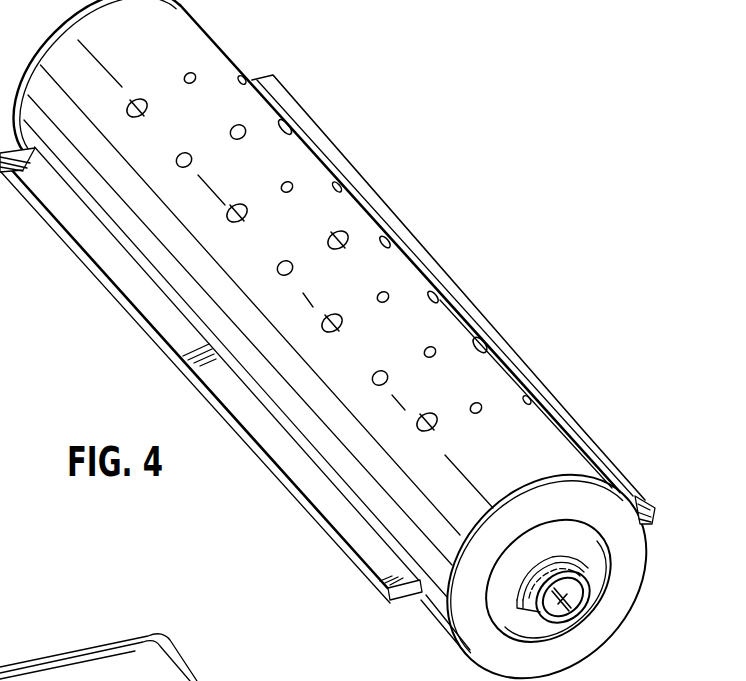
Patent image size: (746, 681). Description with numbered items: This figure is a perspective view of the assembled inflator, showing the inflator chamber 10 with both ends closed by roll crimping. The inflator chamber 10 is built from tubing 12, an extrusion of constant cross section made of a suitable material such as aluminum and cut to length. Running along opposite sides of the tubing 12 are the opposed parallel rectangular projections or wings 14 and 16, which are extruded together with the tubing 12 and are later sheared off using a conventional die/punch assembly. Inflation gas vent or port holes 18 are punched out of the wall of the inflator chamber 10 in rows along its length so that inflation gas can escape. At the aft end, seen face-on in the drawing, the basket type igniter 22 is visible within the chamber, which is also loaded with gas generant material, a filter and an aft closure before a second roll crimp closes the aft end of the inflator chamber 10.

The inflator chamber 10 is at (343, 340).
The tubing 12 is at (453, 333).
The wing 14 is at (323, 493).
The wing 16 is at (553, 393).
The port holes 18 is at (245, 210).
The basket type igniter 22 is at (597, 575).